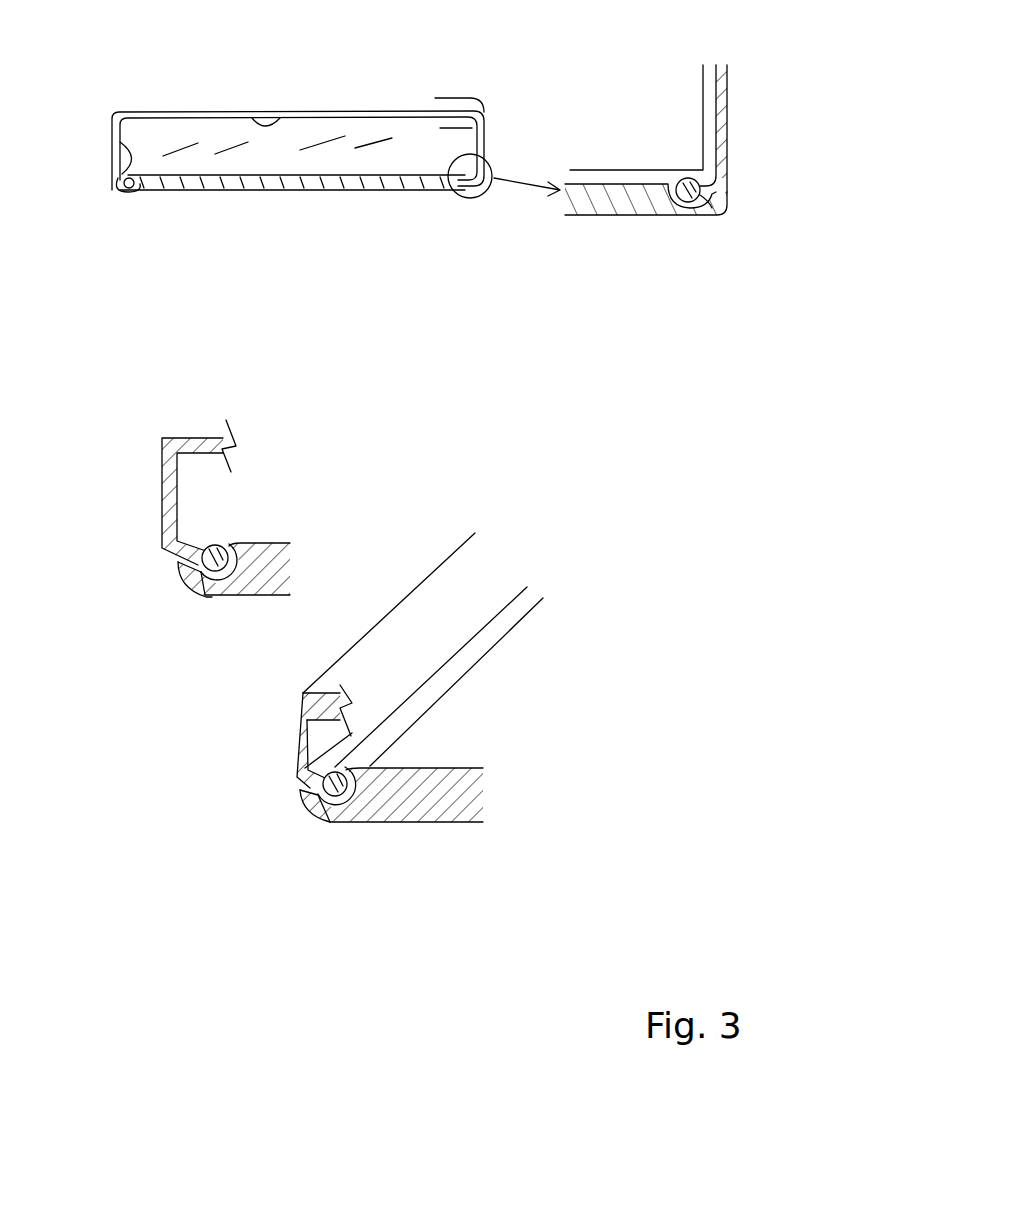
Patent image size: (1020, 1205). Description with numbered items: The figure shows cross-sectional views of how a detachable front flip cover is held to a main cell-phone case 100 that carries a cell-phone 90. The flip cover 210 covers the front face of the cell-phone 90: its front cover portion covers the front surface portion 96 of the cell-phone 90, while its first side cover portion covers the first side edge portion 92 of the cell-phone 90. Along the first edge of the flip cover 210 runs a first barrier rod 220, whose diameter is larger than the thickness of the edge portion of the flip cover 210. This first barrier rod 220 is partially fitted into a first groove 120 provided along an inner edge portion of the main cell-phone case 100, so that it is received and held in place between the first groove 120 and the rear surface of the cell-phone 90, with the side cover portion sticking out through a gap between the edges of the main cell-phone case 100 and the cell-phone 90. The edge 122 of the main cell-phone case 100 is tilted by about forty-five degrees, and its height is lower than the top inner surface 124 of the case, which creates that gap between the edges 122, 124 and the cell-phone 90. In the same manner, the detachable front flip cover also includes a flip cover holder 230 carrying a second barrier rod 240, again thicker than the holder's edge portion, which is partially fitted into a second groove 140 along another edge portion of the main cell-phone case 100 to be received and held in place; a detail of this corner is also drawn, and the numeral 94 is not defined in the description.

The cell-phone 90 is at (392, 143).
The first side edge portion 92 is at (128, 172).
The inner frame surface 94 is at (440, 128).
The front surface portion 96 is at (272, 127).
The main cell-phone case 100 is at (297, 180).
The first groove 120 is at (185, 573).
The edge 122 is at (298, 792).
The top inner surface 124 is at (232, 545).
The second groove 140 is at (668, 216).
The flip cover 210 is at (178, 110).
The first barrier rod 220 is at (225, 573).
The flip cover holder 230 is at (468, 97).
The second barrier rod 240 is at (692, 183).